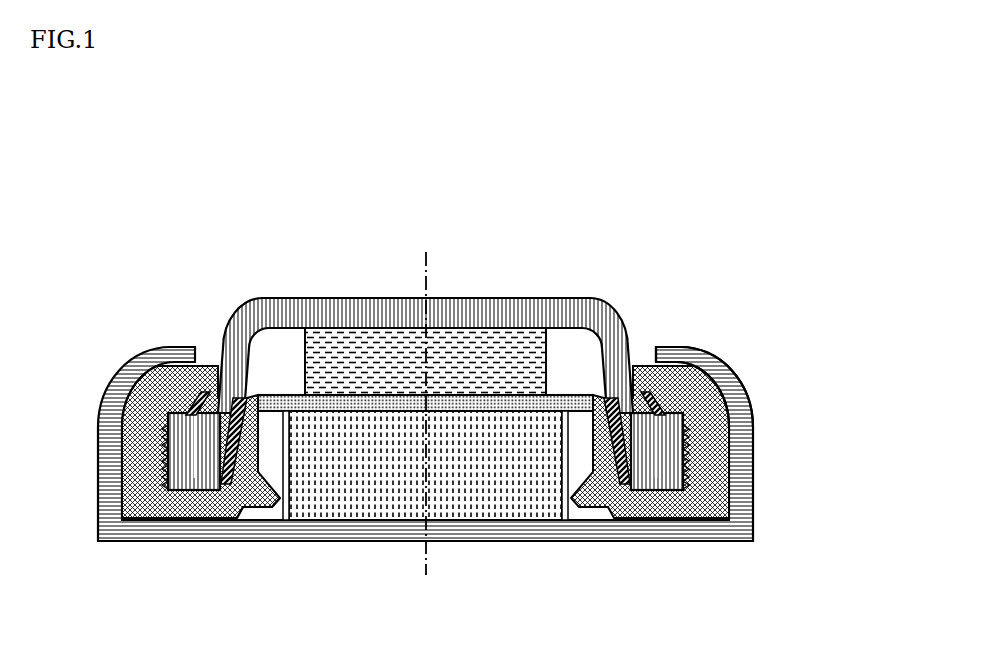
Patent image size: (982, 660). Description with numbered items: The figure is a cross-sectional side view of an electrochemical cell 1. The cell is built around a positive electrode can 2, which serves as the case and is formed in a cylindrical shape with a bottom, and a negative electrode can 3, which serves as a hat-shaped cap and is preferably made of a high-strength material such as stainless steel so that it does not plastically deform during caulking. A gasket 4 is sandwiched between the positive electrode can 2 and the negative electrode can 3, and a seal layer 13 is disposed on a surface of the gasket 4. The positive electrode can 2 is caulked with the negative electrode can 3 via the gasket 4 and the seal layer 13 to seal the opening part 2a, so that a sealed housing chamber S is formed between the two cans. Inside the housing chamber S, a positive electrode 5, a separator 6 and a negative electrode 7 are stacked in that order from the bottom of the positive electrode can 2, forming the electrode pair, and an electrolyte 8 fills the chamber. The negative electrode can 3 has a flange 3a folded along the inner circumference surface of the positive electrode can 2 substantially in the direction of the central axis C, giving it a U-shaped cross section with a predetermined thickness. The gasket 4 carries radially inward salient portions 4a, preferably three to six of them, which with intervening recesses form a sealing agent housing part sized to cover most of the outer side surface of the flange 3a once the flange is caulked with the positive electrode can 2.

The electrochemical cell 1 is at (660, 226).
The positive electrode can 2 is at (752, 517).
The opening part 2a is at (688, 355).
The negative electrode can 3 is at (238, 313).
The flange 3a is at (163, 457).
The gasket 4 is at (698, 400).
The salient portions 4a is at (162, 425).
The positive electrode 5 is at (518, 502).
The separator 6 is at (547, 393).
The negative electrode 7 is at (335, 352).
The electrolyte 8 is at (280, 498).
The seal layer 13 is at (240, 520).
The housing chamber S is at (490, 405).
The central axis C is at (428, 267).